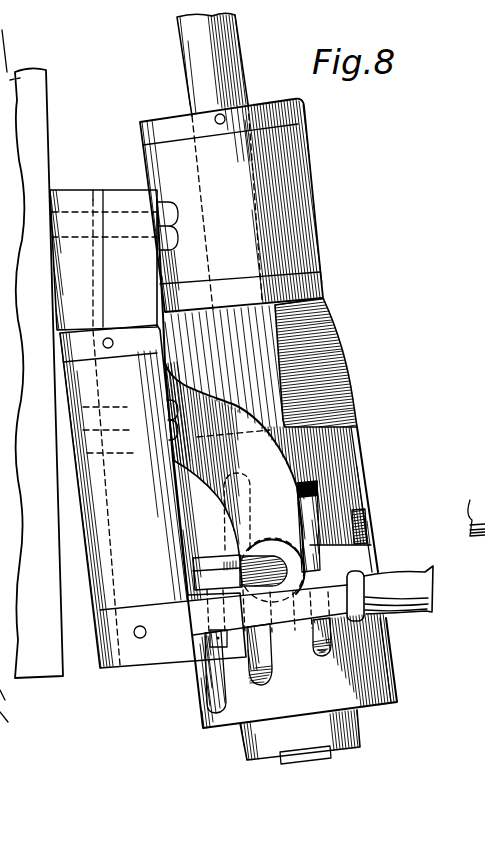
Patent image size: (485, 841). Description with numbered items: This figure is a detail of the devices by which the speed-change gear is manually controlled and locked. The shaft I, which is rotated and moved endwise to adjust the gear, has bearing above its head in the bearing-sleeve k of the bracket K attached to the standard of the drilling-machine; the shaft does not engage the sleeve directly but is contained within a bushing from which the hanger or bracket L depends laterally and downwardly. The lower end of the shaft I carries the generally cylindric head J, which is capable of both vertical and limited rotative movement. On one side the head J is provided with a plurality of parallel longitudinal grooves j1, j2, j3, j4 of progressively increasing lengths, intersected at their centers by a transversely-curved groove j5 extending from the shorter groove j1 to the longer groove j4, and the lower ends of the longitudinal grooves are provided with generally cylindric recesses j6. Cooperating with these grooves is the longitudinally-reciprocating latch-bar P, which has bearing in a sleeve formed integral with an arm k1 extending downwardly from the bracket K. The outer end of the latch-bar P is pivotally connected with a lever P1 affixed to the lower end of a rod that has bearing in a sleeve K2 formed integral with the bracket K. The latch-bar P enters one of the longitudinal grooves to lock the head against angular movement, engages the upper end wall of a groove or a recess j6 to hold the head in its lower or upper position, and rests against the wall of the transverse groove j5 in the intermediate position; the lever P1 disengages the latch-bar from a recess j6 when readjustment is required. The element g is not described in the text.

The side plate g is at (30, 355).
The bracket K is at (133, 284).
The sleeve K2 is at (135, 573).
The shaft I is at (237, 57).
The bearing-sleeve k is at (323, 224).
The hanger L is at (346, 340).
The head J is at (363, 450).
The longitudinal groove j1 is at (367, 533).
The transversely-curved groove j5 is at (353, 567).
The arm k1 is at (256, 474).
The latch-bar P is at (270, 557).
The lever P1 is at (426, 591).
The longitudinal groove j2 is at (313, 638).
The longitudinal groove j3 is at (250, 650).
The longitudinal groove j4 is at (207, 678).
The cylindric recess j6 is at (265, 677).